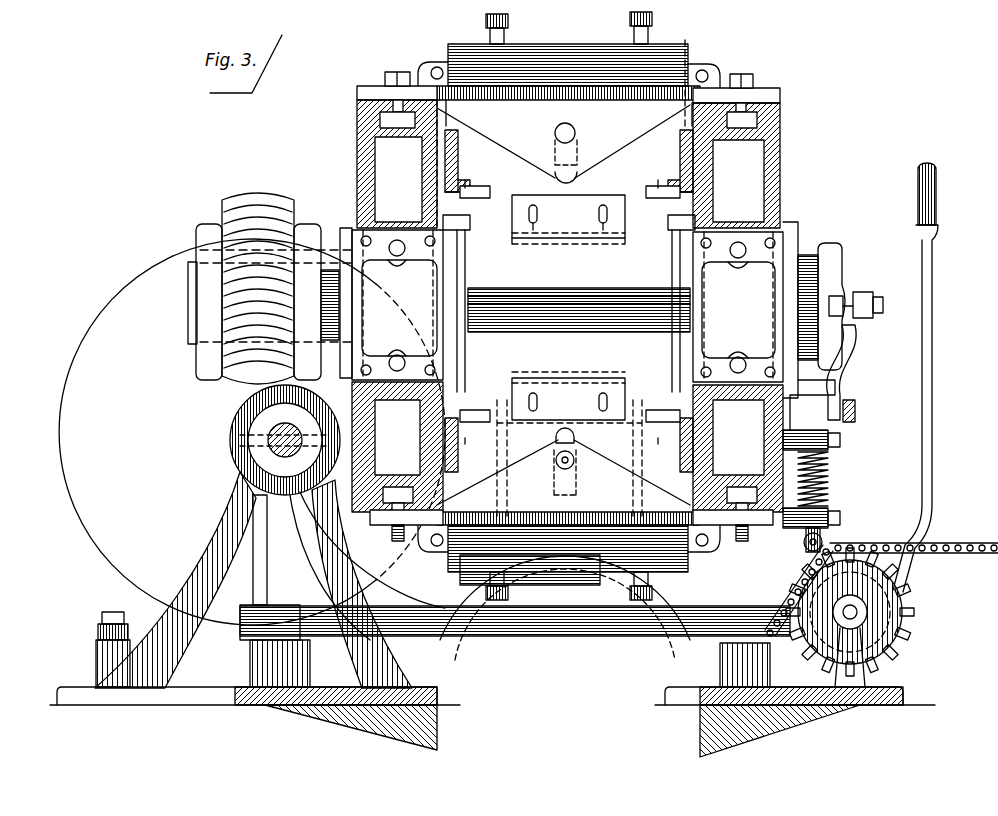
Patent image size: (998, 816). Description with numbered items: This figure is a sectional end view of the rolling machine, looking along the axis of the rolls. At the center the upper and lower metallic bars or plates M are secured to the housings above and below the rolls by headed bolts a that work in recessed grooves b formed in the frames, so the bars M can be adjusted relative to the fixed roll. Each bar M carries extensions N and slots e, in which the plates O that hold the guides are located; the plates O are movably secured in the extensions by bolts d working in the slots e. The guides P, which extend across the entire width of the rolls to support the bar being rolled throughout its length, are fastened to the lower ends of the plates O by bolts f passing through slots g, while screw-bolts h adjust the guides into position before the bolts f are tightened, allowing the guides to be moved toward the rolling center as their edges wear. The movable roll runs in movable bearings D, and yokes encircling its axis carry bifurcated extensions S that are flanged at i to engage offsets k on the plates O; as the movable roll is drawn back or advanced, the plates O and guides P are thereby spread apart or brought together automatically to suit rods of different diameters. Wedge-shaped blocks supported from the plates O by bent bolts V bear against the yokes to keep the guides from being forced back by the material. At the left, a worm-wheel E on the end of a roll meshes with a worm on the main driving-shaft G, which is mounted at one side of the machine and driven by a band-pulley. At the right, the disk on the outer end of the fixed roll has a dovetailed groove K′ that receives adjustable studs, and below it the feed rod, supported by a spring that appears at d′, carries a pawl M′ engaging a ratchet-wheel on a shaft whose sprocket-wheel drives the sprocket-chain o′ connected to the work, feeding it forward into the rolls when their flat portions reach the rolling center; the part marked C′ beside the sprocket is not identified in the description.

The headed bolts a is at (568, 100).
The recessed grooves b is at (357, 118).
The bolts d is at (555, 138).
The slots e is at (548, 486).
The bolts f is at (568, 220).
The slots g is at (537, 209).
The screw-bolts h is at (486, 18).
The flanges i is at (559, 303).
The offsets k is at (716, 178).
The metallic bars or plates M is at (569, 308).
The extensions N is at (563, 141).
The plates for holding the guides O is at (563, 342).
The guides P is at (579, 313).
The bifurcated extensions S is at (458, 150).
The movable bearings D is at (352, 328).
The worm-wheels E is at (250, 206).
The main driving-shaft G is at (228, 448).
The dovetailed groove K′ is at (840, 300).
The bent bolts V is at (811, 479).
The spring d′ is at (823, 479).
The pawl M′ is at (816, 564).
The chain C′ is at (775, 612).
The sprocket-chain o′ is at (914, 538).